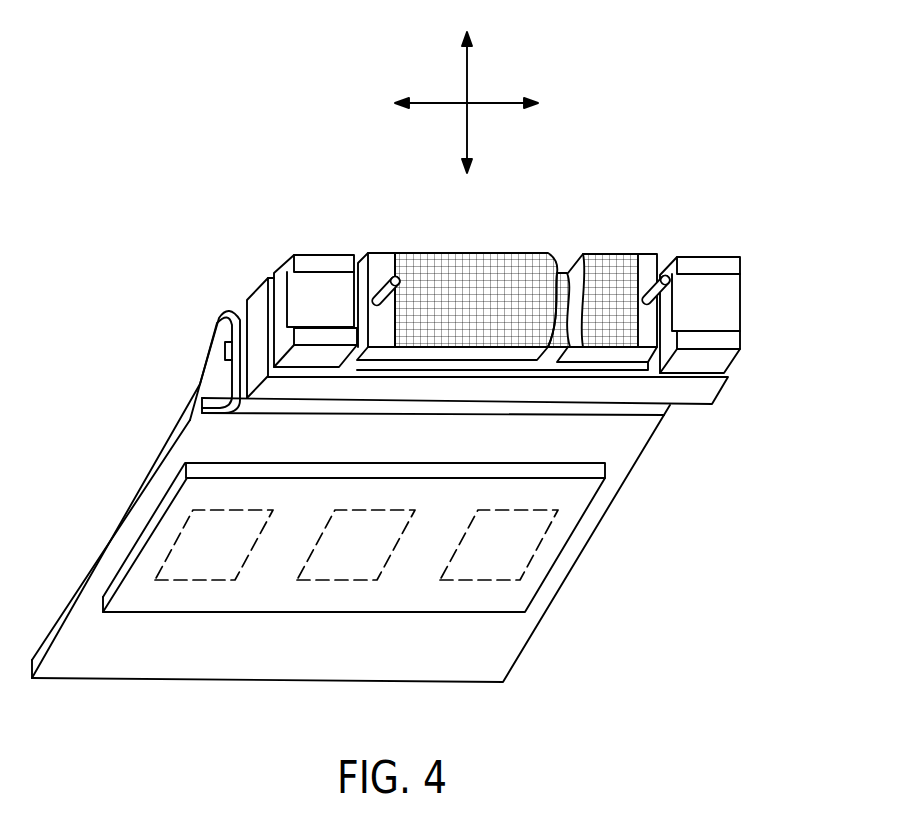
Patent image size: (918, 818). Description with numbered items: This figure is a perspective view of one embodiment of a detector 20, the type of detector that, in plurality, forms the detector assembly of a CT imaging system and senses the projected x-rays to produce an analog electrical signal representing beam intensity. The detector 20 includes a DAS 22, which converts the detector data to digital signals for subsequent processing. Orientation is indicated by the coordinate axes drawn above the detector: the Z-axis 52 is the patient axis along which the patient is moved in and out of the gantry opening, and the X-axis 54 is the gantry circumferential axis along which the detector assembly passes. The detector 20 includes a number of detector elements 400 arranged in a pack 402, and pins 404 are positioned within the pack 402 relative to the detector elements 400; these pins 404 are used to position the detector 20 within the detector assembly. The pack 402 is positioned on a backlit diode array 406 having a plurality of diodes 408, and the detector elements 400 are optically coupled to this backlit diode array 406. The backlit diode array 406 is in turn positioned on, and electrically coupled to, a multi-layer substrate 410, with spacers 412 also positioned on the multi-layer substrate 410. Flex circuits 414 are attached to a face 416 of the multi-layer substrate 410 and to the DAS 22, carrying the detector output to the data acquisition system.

The detector 20 is at (757, 161).
The data acquisition system 22 is at (590, 537).
The Z-axis 52 is at (492, 105).
The X-axis 54 is at (465, 72).
The detector elements 400 is at (478, 253).
The pack 402 is at (393, 248).
The pins 404 is at (652, 280).
The backlit diode array 406 is at (638, 371).
The diodes 408 is at (566, 272).
The multi-layer substrate 410 is at (712, 404).
The spacers 412 is at (324, 253).
The flex circuits 414 is at (198, 357).
The face 416 is at (242, 300).